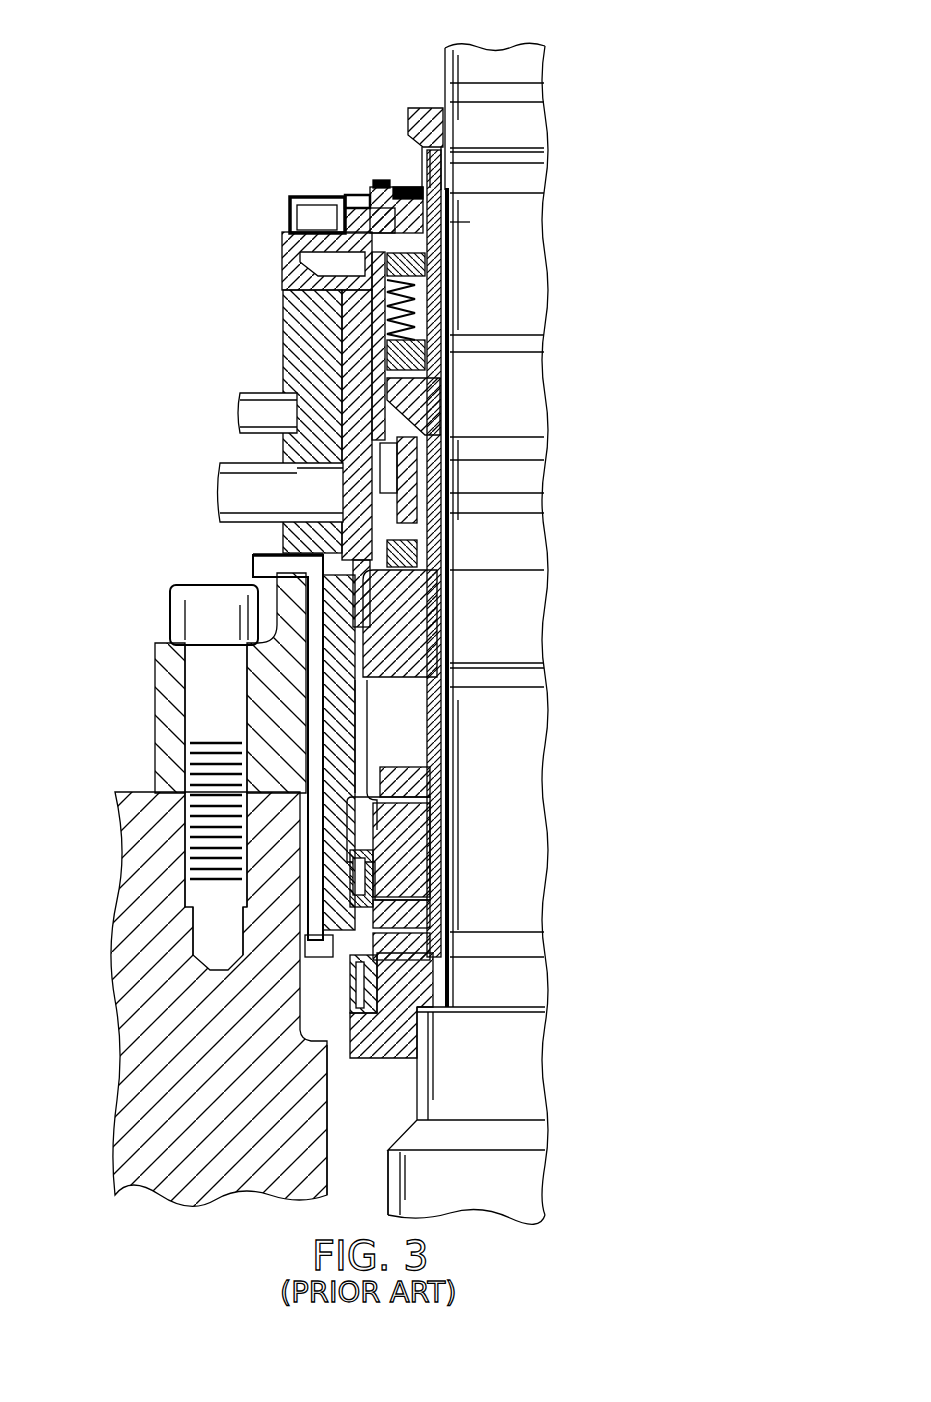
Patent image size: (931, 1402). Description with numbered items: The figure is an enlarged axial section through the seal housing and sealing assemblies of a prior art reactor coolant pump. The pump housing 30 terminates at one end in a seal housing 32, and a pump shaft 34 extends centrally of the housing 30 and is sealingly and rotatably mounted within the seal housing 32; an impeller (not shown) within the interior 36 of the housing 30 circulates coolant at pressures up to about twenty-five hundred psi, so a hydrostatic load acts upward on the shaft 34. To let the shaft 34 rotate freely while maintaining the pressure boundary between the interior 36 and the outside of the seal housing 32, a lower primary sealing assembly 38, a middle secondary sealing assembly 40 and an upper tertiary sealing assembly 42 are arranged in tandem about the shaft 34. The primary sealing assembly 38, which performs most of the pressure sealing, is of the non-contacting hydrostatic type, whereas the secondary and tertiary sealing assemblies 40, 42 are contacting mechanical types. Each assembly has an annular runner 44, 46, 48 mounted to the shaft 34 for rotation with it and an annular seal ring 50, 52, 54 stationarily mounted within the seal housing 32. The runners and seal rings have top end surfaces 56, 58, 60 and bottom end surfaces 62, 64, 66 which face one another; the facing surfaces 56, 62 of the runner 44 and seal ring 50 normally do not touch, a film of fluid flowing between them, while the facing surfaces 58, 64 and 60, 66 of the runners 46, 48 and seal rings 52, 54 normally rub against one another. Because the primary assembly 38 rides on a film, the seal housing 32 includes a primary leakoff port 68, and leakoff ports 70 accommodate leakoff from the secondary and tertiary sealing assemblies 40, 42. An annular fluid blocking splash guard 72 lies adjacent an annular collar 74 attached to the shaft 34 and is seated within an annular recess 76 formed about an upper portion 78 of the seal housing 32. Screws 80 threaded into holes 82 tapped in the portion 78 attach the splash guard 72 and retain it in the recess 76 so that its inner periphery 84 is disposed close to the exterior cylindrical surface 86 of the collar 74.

The pump housing 30 is at (163, 981).
The seal housing 32 is at (280, 545).
The pump shaft 34 is at (530, 70).
The interior 36 is at (363, 1137).
The lower primary sealing assembly 38 is at (462, 903).
The middle secondary sealing assembly 40 is at (461, 558).
The upper tertiary sealing assembly 42 is at (466, 331).
The annular runner 44 is at (447, 950).
The annular runner 46 is at (447, 613).
The annular runner 48 is at (447, 350).
The annular seal ring 50 is at (447, 867).
The annular seal ring 52 is at (447, 508).
The annular seal ring 54 is at (447, 322).
The top end surface 56 is at (447, 900).
The top end surface 58 is at (450, 515).
The top end surface 60 is at (447, 332).
The bottom end surface 62 is at (447, 943).
The bottom end surface 64 is at (370, 597).
The bottom end surface 66 is at (383, 377).
The primary leakoff port 68 is at (240, 463).
The leakoff ports 70 is at (283, 253).
The annular fluid blocking splash guard 72 is at (410, 212).
The annular collar 74 is at (430, 173).
The annular recess 76 is at (450, 213).
The upper portion 78 is at (362, 186).
The screws 80 is at (381, 180).
The holes 82 is at (462, 220).
The inner periphery 84 is at (450, 185).
The exterior cylindrical surface 86 is at (385, 178).